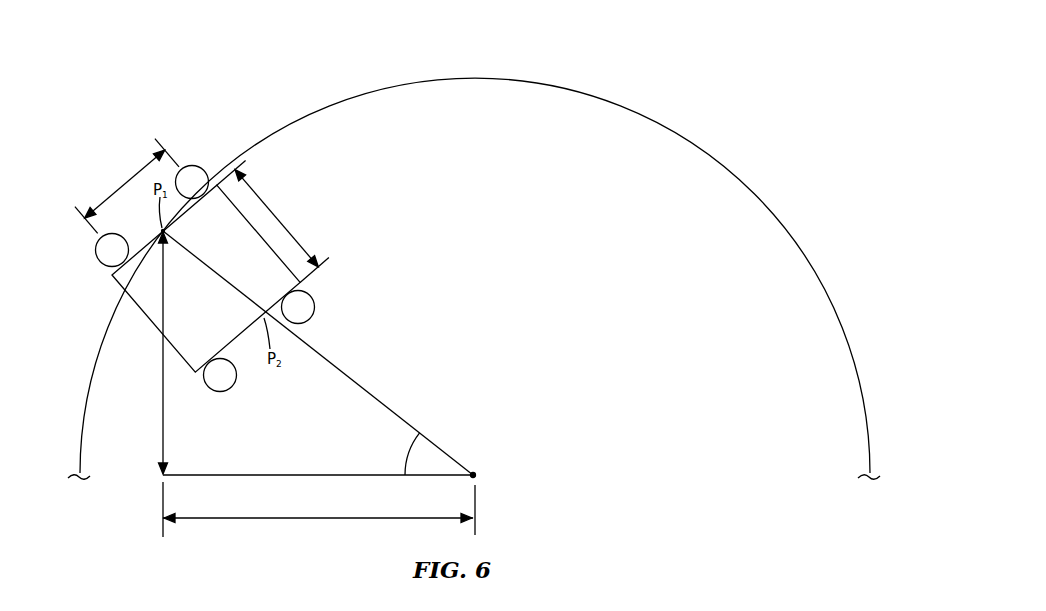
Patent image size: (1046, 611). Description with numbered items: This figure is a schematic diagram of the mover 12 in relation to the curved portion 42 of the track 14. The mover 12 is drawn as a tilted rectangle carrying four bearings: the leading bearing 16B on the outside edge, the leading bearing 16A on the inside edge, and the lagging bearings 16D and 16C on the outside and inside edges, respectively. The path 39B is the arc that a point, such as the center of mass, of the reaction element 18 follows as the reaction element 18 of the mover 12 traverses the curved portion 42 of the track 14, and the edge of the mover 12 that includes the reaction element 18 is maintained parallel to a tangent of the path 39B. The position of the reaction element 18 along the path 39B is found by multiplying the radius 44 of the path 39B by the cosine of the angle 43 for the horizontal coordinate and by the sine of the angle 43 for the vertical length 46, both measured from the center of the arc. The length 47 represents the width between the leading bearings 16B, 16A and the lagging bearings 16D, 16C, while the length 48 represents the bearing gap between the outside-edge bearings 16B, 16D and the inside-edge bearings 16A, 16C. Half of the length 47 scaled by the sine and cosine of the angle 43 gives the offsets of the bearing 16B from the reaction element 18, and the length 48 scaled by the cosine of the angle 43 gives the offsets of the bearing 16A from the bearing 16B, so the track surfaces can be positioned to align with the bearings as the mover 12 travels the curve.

The mover 12 is at (153, 327).
The track 14 is at (683, 74).
The bearing 16A is at (220, 391).
The bearing 16B is at (96, 253).
The bearing 16C is at (316, 309).
The bearing 16D is at (197, 166).
The reaction element 18 is at (162, 230).
The path 39B is at (90, 384).
The curved portion 42 is at (724, 131).
The angle 43 is at (407, 465).
The radius 44 is at (366, 385).
The length 46 is at (160, 373).
The length 47 is at (124, 186).
The length 48 is at (282, 224).